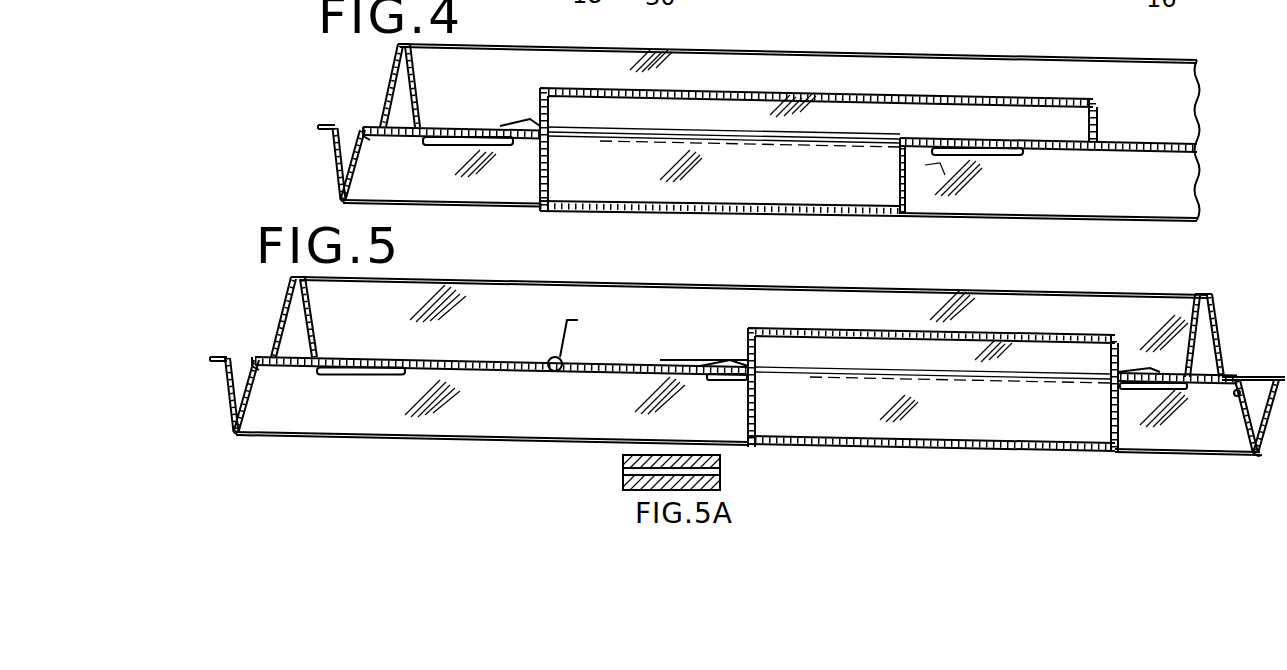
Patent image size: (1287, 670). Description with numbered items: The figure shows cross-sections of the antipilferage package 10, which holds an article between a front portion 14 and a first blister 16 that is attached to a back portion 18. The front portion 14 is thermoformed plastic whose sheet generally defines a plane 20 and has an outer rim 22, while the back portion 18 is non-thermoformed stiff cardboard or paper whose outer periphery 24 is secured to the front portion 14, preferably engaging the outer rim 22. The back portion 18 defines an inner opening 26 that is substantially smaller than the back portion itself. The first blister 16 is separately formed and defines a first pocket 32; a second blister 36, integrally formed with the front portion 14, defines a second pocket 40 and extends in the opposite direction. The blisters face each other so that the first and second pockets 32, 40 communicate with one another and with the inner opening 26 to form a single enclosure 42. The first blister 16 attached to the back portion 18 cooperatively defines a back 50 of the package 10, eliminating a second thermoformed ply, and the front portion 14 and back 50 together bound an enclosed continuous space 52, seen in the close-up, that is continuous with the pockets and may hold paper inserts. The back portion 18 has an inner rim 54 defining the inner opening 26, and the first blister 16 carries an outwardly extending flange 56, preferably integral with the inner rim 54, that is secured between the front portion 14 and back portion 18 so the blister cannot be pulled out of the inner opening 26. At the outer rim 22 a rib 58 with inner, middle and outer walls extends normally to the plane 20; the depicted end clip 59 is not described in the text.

In FIG. 4, the antipilferage package 10 is at (253, 113).
In FIG. 5, the antipilferage package 10 is at (196, 325).
In FIG. 4, the front portion 14 is at (1170, 113).
In FIG. 5, the front portion 14 is at (1007, 305).
In FIG. 5A, the front portion 14 is at (720, 460).
In FIG. 4, the first blister 16 is at (910, 216).
In FIG. 5, the first blister 16 is at (1115, 452).
In FIG. 4, the back portion 18 is at (1076, 158).
In FIG. 5, the back portion 18 is at (590, 376).
In FIG. 5A, the back portion 18 is at (720, 487).
In FIG. 4, the plane 20 is at (476, 126).
In FIG. 5, the plane 20 is at (651, 358).
In FIG. 4, the outer rim 22 is at (442, 126).
In FIG. 5, the outer rim 22 is at (345, 357).
In FIG. 4, the outer periphery 24 is at (375, 133).
In FIG. 5, the outer periphery 24 is at (262, 371).
In FIG. 4, the inner opening 26 is at (550, 140).
In FIG. 5, the inner opening 26 is at (760, 366).
In FIG. 4, the first pocket 32 is at (818, 182).
In FIG. 5, the first pocket 32 is at (1019, 417).
In FIG. 4, the second blister 36 is at (992, 98).
In FIG. 4, the second pocket 40 is at (868, 130).
In FIG. 5, the second pocket 40 is at (935, 360).
In FIG. 4, the enclosure 42 is at (710, 110).
In FIG. 5, the enclosure 42 is at (855, 425).
In FIG. 4, the back 50 is at (1117, 152).
In FIG. 5, the back 50 is at (702, 378).
In FIG. 5A, the enclosed continuous space 52 is at (623, 472).
In FIG. 4, the inner rim 54 is at (530, 152).
In FIG. 5, the inner rim 54 is at (745, 382).
In FIG. 4, the flange 56 is at (520, 125).
In FIG. 5, the flange 56 is at (720, 352).
In FIG. 4, the rib 58 is at (333, 170).
In FIG. 5, the rib 58 is at (250, 412).
In FIG. 5, the V-shaped end clip 59 is at (1140, 395).